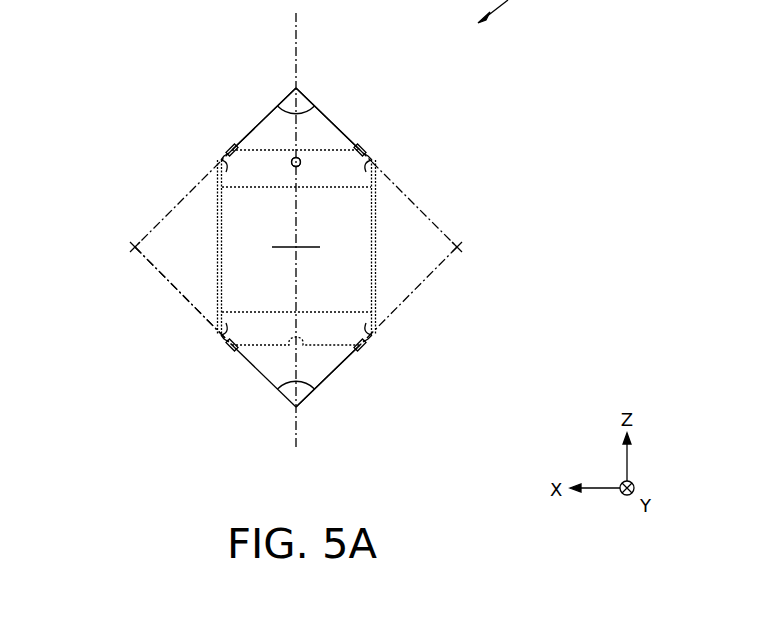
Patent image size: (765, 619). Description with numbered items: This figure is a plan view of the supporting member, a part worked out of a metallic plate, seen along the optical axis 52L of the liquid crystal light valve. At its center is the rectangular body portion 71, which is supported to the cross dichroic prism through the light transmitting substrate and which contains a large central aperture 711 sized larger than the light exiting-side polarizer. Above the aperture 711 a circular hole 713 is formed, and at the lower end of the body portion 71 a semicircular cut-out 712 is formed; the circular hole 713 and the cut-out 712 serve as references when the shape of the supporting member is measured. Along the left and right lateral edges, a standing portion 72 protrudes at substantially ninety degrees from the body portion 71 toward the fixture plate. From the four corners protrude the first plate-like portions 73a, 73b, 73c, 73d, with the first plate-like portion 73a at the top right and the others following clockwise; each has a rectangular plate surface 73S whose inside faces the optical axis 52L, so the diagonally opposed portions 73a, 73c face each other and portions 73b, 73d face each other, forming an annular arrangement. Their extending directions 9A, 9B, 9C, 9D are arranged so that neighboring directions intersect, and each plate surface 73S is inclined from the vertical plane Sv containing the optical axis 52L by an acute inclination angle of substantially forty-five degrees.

The vertical plane Sv is at (298, 20).
The body portion 71 is at (262, 338).
The standing portion 72 is at (217, 250).
The aperture 711 is at (285, 188).
The semicircular cut-out 712 is at (305, 345).
The circular hole 713 is at (300, 163).
The first plate-like portion 73a is at (400, 108).
The first plate-like portion 73b is at (410, 385).
The first plate-like portion 73c is at (222, 357).
The first plate-like portion 73d is at (228, 143).
The plate surface 73S is at (216, 170).
The optical axis 52L is at (300, 246).
The extending direction 9A is at (333, 118).
The extending direction 9B is at (330, 378).
The extending direction 9C is at (170, 281).
The extending direction 9D is at (260, 118).